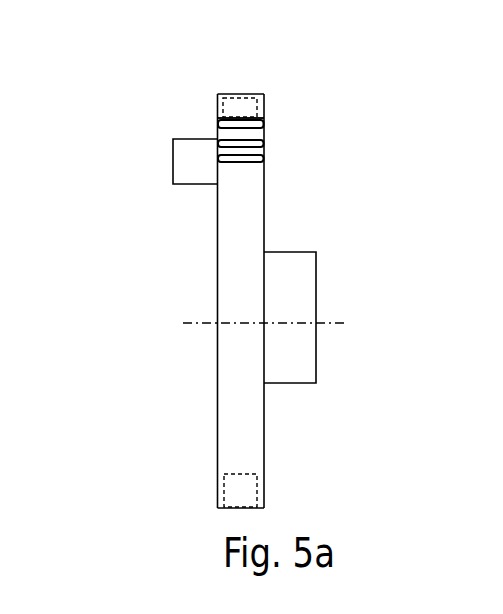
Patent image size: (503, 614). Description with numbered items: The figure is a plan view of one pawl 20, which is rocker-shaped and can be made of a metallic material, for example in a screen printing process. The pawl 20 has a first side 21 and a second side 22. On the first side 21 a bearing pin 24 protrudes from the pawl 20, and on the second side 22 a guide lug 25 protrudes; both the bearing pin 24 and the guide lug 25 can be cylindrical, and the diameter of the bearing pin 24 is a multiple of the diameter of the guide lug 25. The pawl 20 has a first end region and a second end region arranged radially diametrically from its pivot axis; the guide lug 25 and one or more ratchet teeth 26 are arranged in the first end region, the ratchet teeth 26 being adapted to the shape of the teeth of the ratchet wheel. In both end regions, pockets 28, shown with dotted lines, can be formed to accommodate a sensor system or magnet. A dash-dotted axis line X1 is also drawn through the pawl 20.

The pawl 20 is at (200, 207).
The first side 21 is at (265, 432).
The second side 22 is at (217, 383).
The bearing pin 24 is at (283, 295).
The guide lug 25 is at (193, 171).
The ratchet teeth 26 is at (217, 120).
The pockets 28 is at (247, 103).
The axis X1 is at (313, 322).